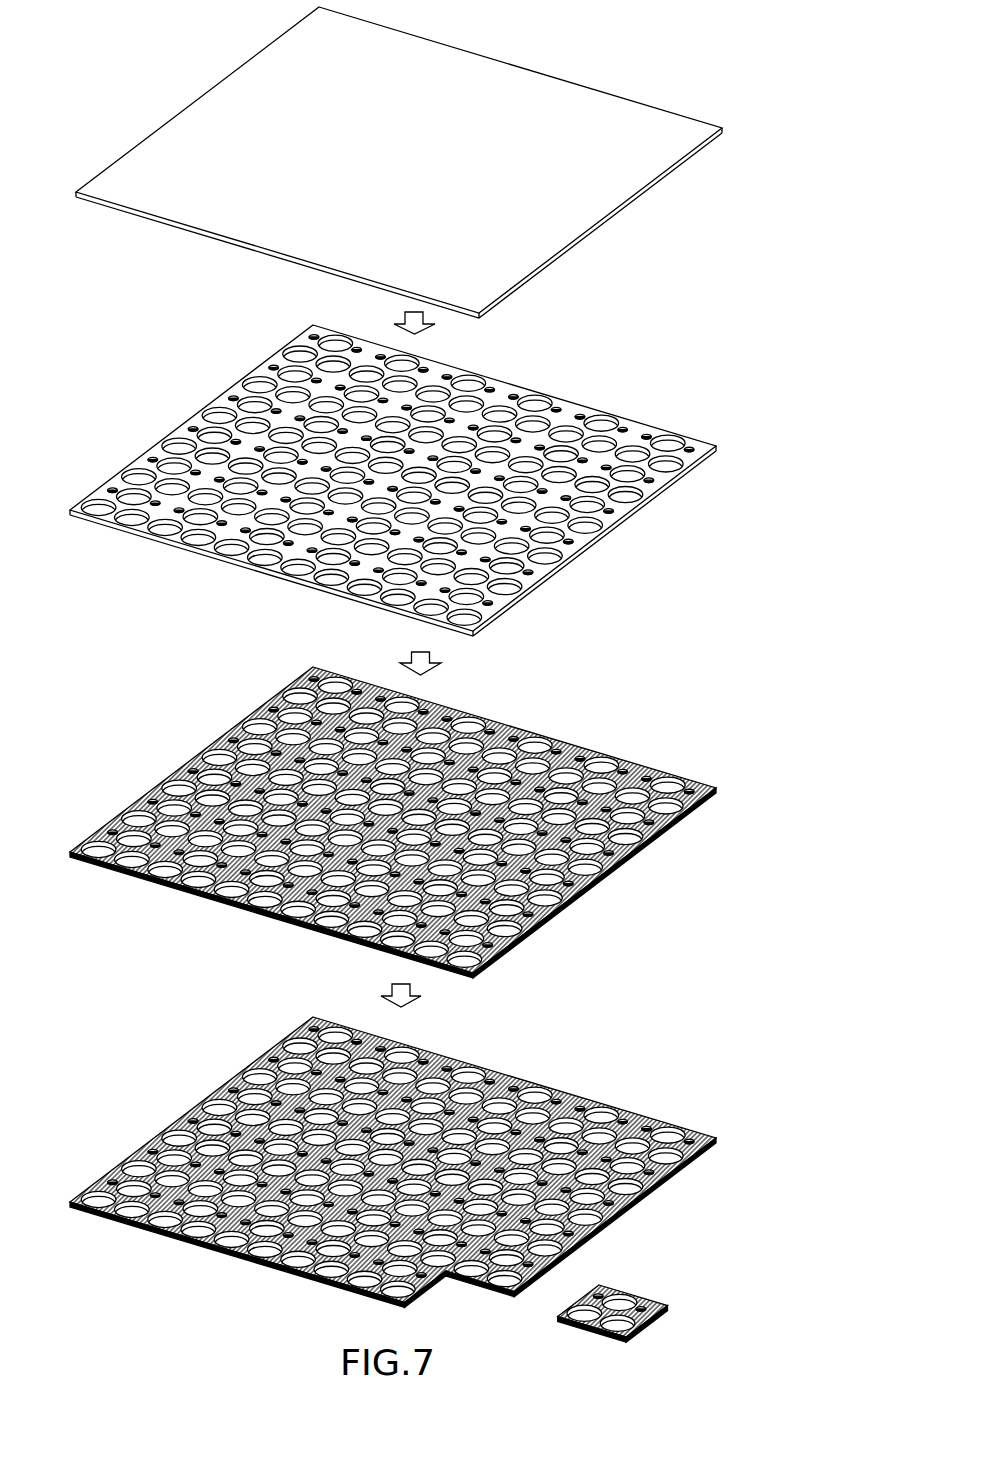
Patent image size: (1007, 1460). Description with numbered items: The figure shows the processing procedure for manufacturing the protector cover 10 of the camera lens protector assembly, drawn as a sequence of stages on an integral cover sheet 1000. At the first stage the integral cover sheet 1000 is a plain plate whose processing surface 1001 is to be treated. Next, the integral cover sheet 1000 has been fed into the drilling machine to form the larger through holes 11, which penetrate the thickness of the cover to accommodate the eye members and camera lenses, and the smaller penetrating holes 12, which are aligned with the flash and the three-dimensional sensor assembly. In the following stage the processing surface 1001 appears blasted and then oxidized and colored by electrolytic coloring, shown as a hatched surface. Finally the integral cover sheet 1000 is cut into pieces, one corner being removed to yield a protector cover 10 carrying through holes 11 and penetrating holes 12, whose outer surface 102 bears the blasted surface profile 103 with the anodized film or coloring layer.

The integral cover sheet 1000 is at (424, 662).
The processing surface 1001 is at (542, 128).
The through hole 11 is at (527, 550).
The penetrating hole 12 is at (523, 530).
The protector cover 10 is at (668, 1297).
The outer surface 102 is at (642, 1296).
The surface profile 103 is at (640, 1320).